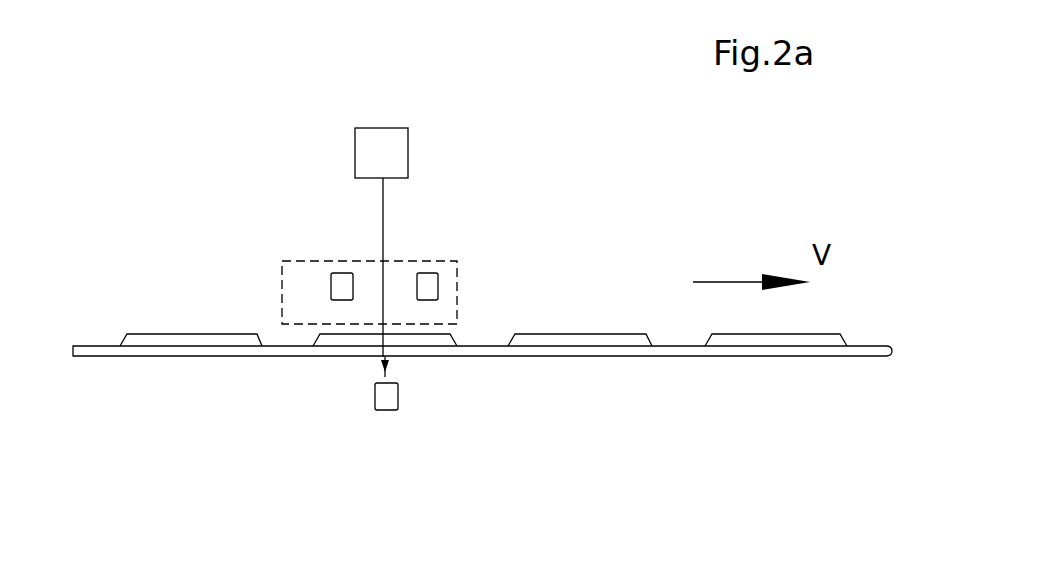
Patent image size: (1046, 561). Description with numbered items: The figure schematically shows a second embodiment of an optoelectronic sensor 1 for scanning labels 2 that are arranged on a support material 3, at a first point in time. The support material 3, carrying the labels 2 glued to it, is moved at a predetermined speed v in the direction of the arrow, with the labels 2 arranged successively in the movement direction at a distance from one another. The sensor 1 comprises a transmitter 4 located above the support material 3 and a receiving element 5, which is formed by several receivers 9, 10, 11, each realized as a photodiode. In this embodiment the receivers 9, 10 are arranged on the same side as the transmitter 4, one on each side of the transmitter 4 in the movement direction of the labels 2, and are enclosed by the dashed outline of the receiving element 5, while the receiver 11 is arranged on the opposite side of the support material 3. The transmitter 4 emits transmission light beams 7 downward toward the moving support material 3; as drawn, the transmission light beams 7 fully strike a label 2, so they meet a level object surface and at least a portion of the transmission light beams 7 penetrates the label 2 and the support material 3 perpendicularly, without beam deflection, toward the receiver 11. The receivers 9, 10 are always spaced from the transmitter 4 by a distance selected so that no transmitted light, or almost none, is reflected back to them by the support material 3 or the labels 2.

The optoelectronic sensor 1 is at (305, 138).
The label 2 is at (565, 341).
The support material 3 is at (597, 353).
The transmitter 4 is at (392, 157).
The receiving element 5 is at (290, 270).
The transmission light beams 7 is at (387, 212).
The receiver 9 is at (340, 292).
The receiver 10 is at (427, 292).
The receiver 11 is at (389, 408).